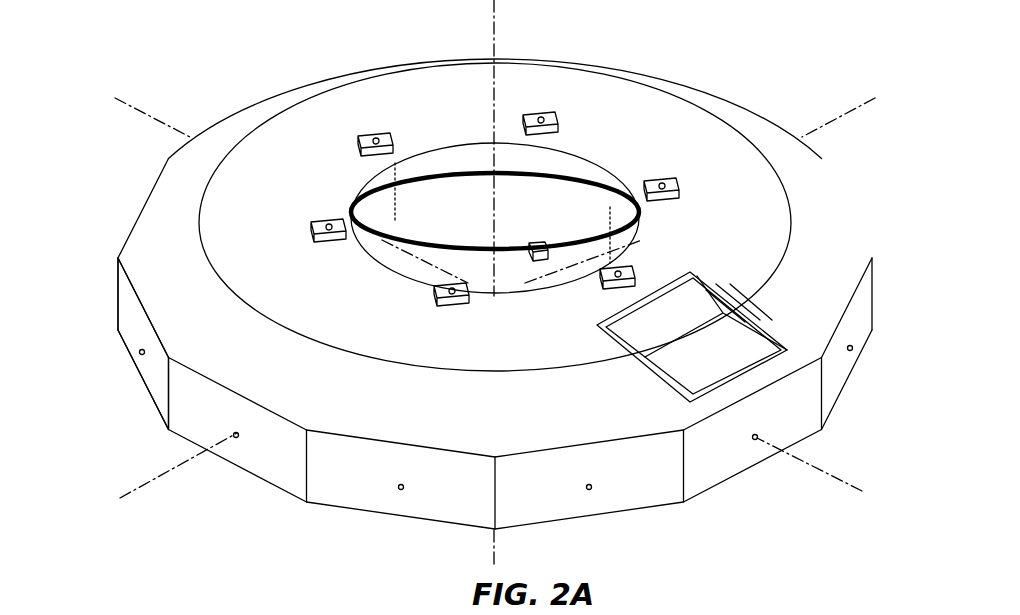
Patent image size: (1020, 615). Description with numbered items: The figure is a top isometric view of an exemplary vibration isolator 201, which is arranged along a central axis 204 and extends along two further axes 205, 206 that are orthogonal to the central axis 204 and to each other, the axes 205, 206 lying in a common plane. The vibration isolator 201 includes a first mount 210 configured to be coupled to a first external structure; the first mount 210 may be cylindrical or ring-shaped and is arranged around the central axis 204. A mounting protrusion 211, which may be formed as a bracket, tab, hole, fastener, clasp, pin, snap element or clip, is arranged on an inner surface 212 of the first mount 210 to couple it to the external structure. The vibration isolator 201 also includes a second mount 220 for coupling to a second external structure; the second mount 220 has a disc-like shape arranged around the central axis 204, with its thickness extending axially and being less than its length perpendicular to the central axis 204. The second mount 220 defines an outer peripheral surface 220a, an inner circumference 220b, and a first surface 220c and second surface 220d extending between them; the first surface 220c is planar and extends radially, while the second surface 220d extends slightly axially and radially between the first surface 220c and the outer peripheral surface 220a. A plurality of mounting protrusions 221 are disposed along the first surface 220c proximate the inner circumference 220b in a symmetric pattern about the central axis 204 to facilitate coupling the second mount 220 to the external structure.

The vibration isolator 201 is at (206, 44).
The central axis 204 is at (503, 30).
The axis 205 is at (182, 463).
The axis 206 is at (832, 477).
The first mount 210 is at (436, 174).
The mounting protrusion 211 is at (545, 250).
The inner surface 212 is at (421, 224).
The second mount 220 is at (706, 77).
The outer peripheral surface 220a is at (127, 315).
The inner circumference 220b is at (623, 250).
The first surface 220c is at (268, 165).
The second surface 220d is at (153, 218).
The mounting protrusions 221 is at (677, 181).